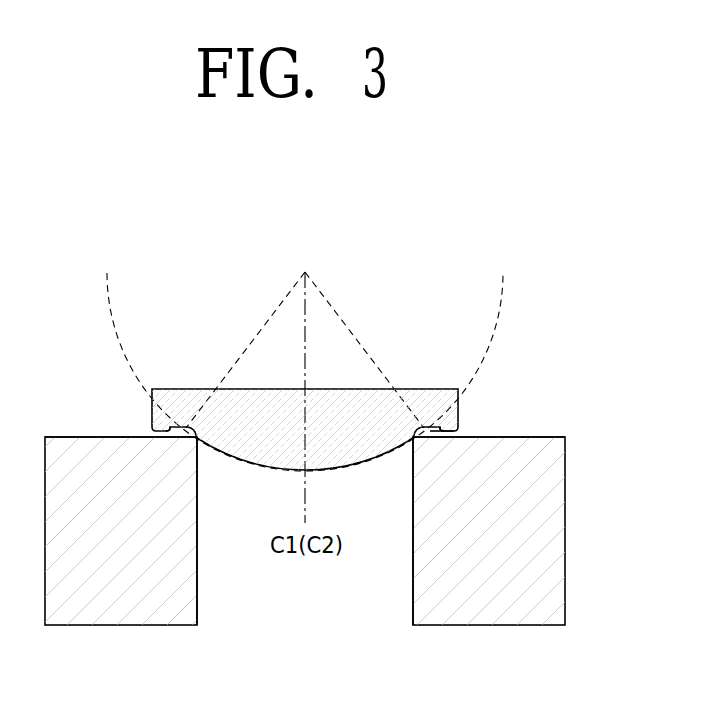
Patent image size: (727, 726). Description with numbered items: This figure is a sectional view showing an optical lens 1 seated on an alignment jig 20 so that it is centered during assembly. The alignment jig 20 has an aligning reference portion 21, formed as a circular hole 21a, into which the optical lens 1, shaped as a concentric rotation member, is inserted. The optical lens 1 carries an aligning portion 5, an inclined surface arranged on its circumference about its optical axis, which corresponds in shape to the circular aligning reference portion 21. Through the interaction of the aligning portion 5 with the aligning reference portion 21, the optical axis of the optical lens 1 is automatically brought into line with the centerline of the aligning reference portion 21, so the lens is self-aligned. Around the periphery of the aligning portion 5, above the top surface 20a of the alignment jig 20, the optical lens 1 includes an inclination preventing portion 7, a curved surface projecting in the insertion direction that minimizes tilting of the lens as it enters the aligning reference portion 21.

The optical lens 1 is at (472, 402).
The aligning portion 5 is at (199, 430).
The inclination preventing portion 7 is at (454, 432).
The alignment jig 20 is at (573, 518).
The top surface 20a is at (552, 437).
The aligning reference portion 21 is at (199, 431).
The circular hole 21a is at (305, 601).